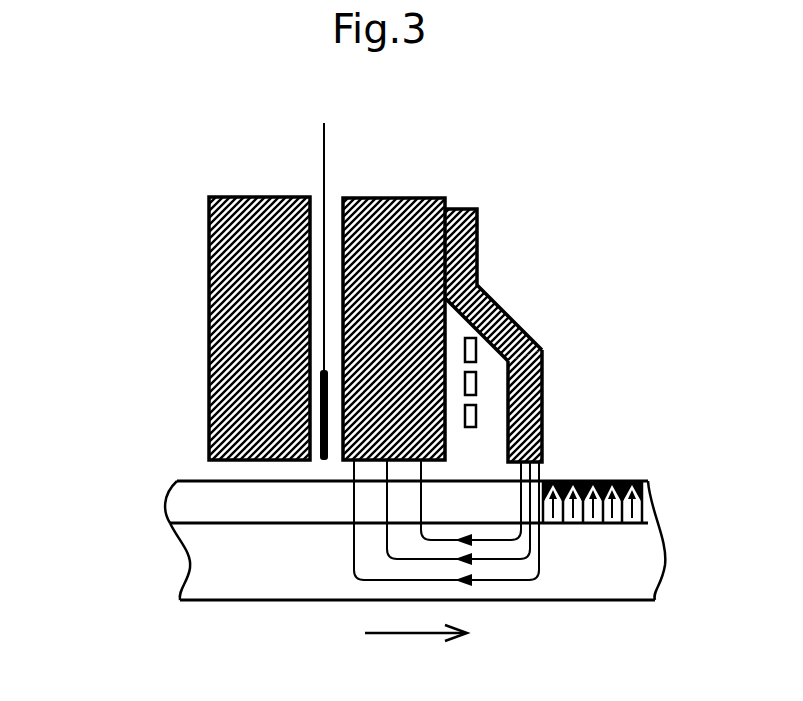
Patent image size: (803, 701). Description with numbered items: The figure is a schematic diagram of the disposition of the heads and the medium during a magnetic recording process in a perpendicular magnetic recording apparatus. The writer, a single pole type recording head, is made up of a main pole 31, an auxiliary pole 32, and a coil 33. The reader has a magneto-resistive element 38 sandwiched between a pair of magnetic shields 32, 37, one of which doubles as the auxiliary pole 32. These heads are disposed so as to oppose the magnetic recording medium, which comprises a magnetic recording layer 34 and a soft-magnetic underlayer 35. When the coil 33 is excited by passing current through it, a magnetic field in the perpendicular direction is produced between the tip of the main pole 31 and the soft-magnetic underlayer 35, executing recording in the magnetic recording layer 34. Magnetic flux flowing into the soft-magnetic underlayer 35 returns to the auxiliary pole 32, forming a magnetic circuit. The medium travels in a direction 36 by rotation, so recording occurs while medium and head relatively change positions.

The main pole 31 is at (547, 387).
The auxiliary pole 32 is at (403, 197).
The coil 33 is at (518, 322).
The magnetic recording layer 34 is at (212, 497).
The soft-magnetic underlayer 35 is at (222, 567).
The direction of medium travel 36 is at (403, 633).
The magnetic shield 37 is at (245, 197).
The magneto-resistive element 38 is at (327, 272).